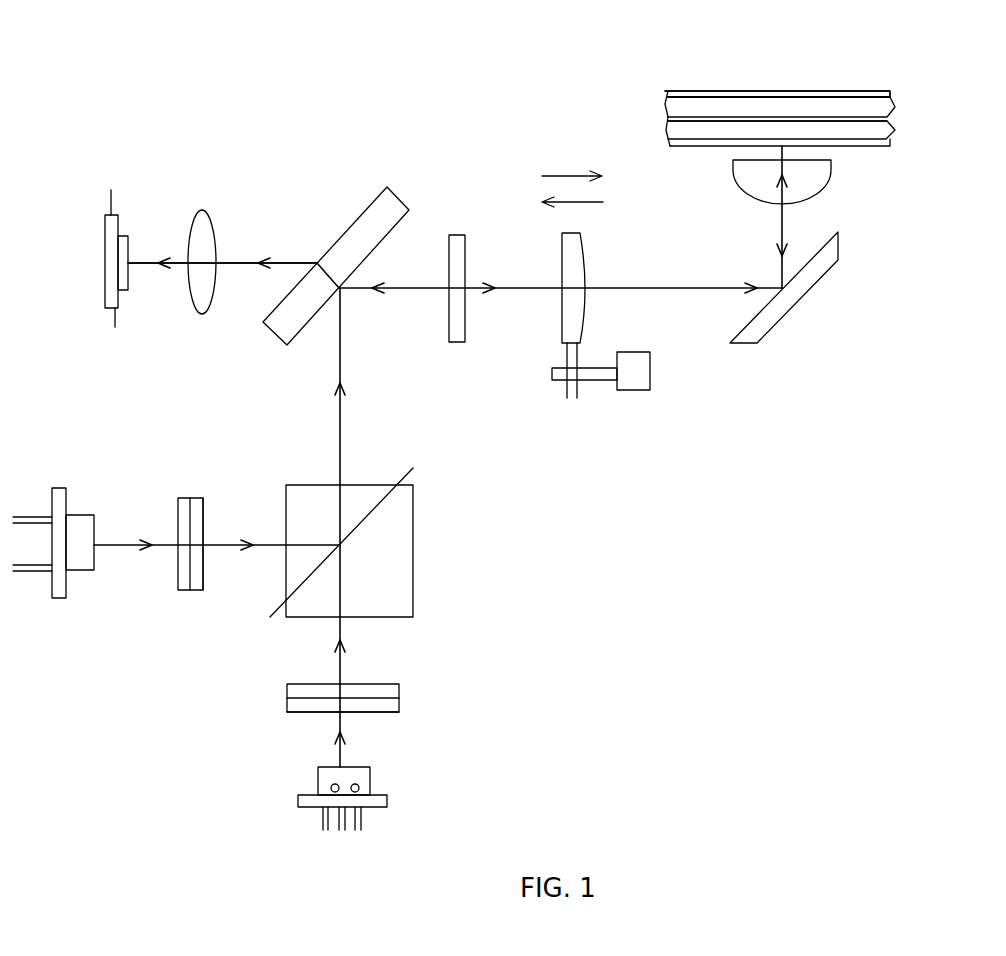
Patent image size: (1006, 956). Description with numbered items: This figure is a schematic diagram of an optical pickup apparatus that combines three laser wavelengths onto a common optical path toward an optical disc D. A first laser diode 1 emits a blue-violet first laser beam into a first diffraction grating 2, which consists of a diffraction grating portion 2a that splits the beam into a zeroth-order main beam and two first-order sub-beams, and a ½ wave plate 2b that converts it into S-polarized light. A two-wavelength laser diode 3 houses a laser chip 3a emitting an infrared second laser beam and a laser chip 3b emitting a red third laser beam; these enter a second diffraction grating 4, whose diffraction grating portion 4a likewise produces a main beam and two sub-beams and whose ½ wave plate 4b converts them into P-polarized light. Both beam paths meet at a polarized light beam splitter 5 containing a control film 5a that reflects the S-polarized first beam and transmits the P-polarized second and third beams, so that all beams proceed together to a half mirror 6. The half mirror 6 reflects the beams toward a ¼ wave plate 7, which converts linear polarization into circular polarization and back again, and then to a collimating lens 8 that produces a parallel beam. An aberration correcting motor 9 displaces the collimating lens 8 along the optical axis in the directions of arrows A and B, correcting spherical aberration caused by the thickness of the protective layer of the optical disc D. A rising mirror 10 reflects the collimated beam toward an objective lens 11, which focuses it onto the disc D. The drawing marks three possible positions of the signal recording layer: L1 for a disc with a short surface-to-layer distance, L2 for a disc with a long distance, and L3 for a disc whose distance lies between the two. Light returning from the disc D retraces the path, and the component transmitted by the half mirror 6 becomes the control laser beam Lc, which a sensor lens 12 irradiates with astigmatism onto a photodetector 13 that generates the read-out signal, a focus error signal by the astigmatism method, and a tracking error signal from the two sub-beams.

The first laser diode 1 is at (76, 570).
The first diffraction grating 2 is at (190, 497).
The diffraction grating portion 2a is at (182, 590).
The ½ wave plate 2b is at (193, 590).
The two-wavelength laser diode 3 is at (370, 780).
The laser chip 3a is at (359, 792).
The laser chip 3b is at (330, 787).
The second diffraction grating 4 is at (399, 692).
The diffraction grating portion 4a is at (287, 708).
The ½ wave plate 4b is at (287, 688).
The polarized light beam splitter 5 is at (408, 562).
The control film 5a is at (382, 502).
The half mirror 6 is at (382, 195).
The ¼ wave plate 7 is at (457, 245).
The collimating lens 8 is at (573, 250).
The aberration correcting motor 9 is at (635, 382).
The rising mirror 10 is at (813, 270).
The objective lens 11 is at (813, 178).
The sensor lens 12 is at (200, 215).
The photodetector 13 is at (107, 255).
The arrow A is at (582, 177).
The arrow B is at (559, 203).
The optical disc D is at (665, 102).
The position of the signal recording layer L1 is at (878, 128).
The position of the signal recording layer L2 is at (882, 92).
The location of the signal recording layer L3 is at (875, 115).
The control laser beam Lc is at (245, 262).